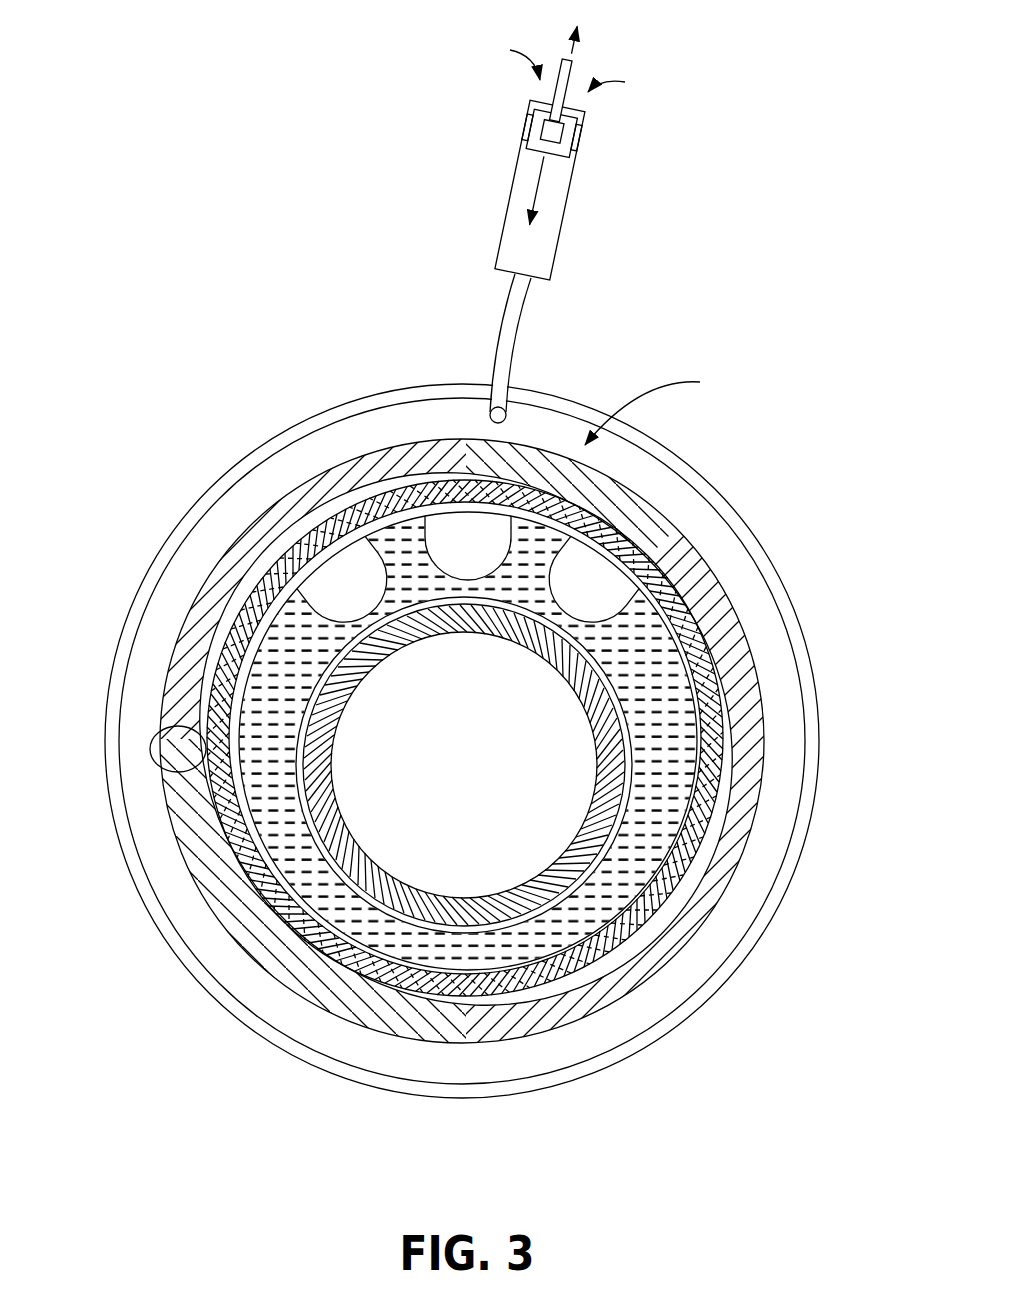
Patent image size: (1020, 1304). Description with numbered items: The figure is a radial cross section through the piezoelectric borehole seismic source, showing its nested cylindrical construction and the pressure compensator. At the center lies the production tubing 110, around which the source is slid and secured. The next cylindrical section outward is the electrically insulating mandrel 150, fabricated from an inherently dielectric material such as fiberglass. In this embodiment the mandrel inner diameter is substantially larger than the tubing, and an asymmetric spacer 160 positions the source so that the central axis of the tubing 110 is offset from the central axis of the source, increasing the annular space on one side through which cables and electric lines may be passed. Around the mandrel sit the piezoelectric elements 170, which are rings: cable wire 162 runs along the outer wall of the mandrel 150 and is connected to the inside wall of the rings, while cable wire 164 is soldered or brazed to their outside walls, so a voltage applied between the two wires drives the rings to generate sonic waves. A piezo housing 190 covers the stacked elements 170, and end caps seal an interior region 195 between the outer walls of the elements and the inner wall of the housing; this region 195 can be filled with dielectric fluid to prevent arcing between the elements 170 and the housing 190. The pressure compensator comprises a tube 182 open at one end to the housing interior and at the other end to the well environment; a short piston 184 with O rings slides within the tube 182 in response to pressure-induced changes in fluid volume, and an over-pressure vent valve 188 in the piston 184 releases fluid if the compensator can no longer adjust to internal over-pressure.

The production tubing 110 is at (590, 848).
The electrically insulating mandrel 150 is at (707, 748).
The asymmetric spacer 160 is at (640, 625).
The cable wire 162 is at (210, 700).
The cable wire 164 is at (150, 748).
The piezoelectric elements 170 is at (753, 653).
The tube 182 is at (553, 270).
The piston 184 is at (552, 150).
The over-pressure vent valve 188 is at (572, 75).
The piezo housing 190 is at (705, 482).
The interior region 195 is at (662, 407).